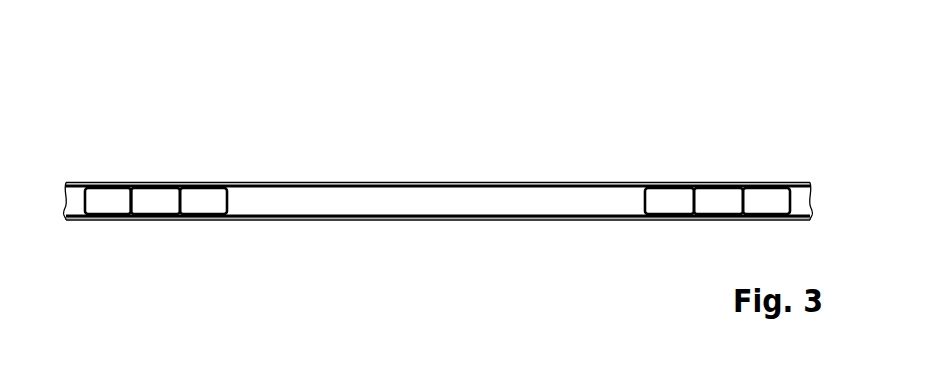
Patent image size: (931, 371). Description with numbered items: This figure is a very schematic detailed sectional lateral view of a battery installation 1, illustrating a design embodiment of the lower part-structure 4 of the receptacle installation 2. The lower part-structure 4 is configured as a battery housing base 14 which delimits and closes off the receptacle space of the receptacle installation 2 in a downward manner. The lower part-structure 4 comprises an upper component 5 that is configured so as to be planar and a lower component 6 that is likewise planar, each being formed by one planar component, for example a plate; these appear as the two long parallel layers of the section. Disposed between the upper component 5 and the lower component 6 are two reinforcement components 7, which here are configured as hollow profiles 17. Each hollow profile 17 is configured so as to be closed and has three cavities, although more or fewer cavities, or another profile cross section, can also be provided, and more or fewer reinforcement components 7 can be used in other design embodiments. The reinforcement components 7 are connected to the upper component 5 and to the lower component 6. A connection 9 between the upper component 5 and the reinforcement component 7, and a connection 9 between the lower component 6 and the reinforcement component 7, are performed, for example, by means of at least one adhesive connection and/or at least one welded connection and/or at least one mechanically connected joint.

The component 1 is at (429, 162).
The receptacle installation 2 is at (669, 151).
The lower part-structure 4 is at (136, 187).
The upper component 5 is at (383, 182).
The lower component 6 is at (375, 223).
The reinforcement component 7 is at (80, 230).
The connection 9 is at (200, 172).
The battery housing base 14 is at (150, 172).
The hollow profile 17 is at (136, 204).